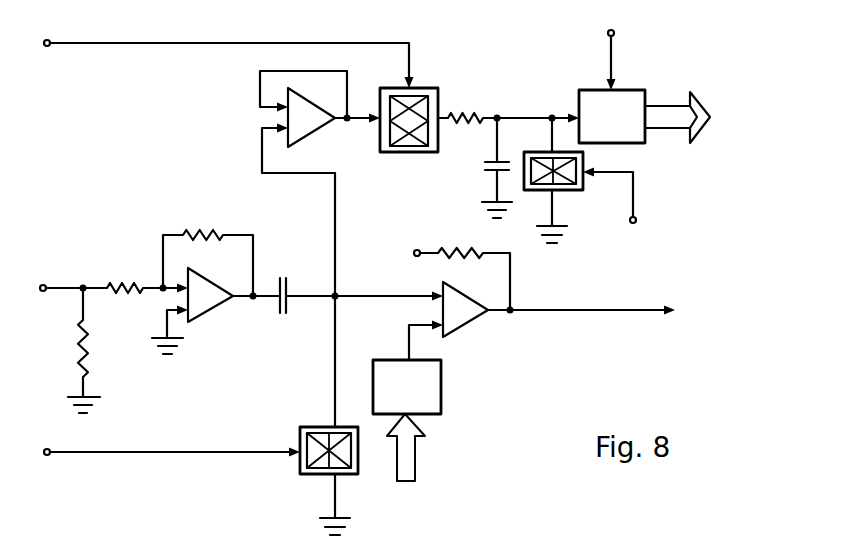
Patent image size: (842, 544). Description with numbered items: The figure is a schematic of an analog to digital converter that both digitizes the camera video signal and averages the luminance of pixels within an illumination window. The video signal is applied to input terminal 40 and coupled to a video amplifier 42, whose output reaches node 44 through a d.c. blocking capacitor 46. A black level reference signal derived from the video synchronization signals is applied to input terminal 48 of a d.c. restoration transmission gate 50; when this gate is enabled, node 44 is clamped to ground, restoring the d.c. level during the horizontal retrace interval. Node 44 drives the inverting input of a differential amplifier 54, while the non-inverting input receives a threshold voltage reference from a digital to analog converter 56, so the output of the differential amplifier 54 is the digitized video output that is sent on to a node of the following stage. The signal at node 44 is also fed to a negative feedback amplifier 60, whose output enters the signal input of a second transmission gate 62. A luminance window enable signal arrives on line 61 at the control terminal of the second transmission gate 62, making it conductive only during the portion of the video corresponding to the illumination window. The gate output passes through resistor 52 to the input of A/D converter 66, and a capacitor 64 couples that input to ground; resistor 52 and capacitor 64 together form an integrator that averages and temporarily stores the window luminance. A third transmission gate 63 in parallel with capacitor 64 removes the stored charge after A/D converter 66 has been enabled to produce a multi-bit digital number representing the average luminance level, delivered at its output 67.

The input terminal 40 is at (49, 294).
The video amplifier 42 is at (224, 325).
The node 44 is at (340, 299).
The d.c. blocking capacitor 46 is at (290, 273).
The input terminal 48 is at (50, 447).
The d.c. restoration transmission gate 50 is at (315, 474).
The resistor 52 is at (460, 110).
The differential amplifier 54 is at (470, 327).
The digital to analog converter 56 is at (435, 387).
The negative feedback amplifier 60 is at (318, 133).
The line 61 is at (265, 43).
The second transmission gate 62 is at (427, 155).
The third transmission gate 63 is at (568, 192).
The capacitor 64 is at (488, 165).
The A/D converter 66 is at (638, 137).
The average luminance level output 67 is at (700, 120).